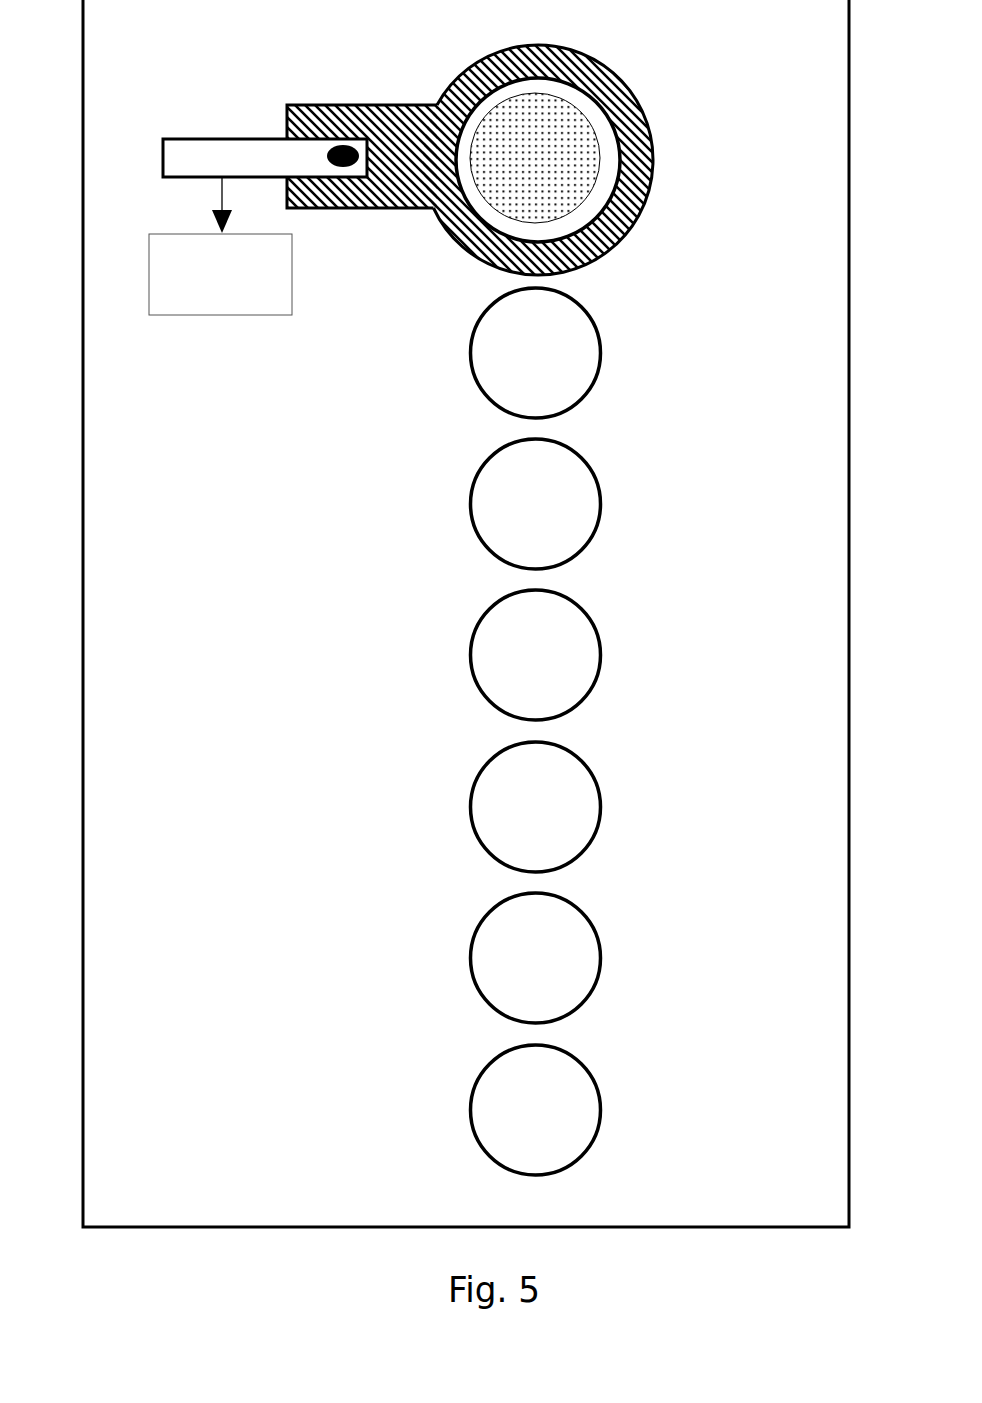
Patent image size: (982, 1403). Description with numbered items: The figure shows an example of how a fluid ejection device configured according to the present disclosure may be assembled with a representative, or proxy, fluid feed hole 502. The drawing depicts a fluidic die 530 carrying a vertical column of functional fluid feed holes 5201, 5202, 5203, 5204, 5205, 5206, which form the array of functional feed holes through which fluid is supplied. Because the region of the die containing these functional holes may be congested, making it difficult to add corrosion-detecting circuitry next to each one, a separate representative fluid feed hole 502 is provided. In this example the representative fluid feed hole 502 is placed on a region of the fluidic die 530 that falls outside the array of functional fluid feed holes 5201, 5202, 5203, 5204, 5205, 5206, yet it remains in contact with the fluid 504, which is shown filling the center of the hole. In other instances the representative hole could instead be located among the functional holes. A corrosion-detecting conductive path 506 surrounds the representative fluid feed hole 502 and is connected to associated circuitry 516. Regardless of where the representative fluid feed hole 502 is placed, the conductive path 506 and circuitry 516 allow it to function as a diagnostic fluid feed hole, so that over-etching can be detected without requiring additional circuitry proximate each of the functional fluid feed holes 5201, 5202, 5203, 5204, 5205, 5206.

The representative fluid feed hole 502 is at (547, 222).
The fluid 504 is at (533, 158).
The corrosion-detecting conductive path 506 is at (393, 128).
The circuitry 516 is at (220, 246).
The fluidic die 530 is at (103, 358).
The functional fluid feed hole 5201 is at (573, 341).
The functional fluid feed hole 5202 is at (573, 492).
The functional fluid feed hole 5203 is at (573, 643).
The functional fluid feed hole 5204 is at (573, 795).
The functional fluid feed hole 5205 is at (573, 946).
The functional fluid feed hole 5206 is at (573, 1098).